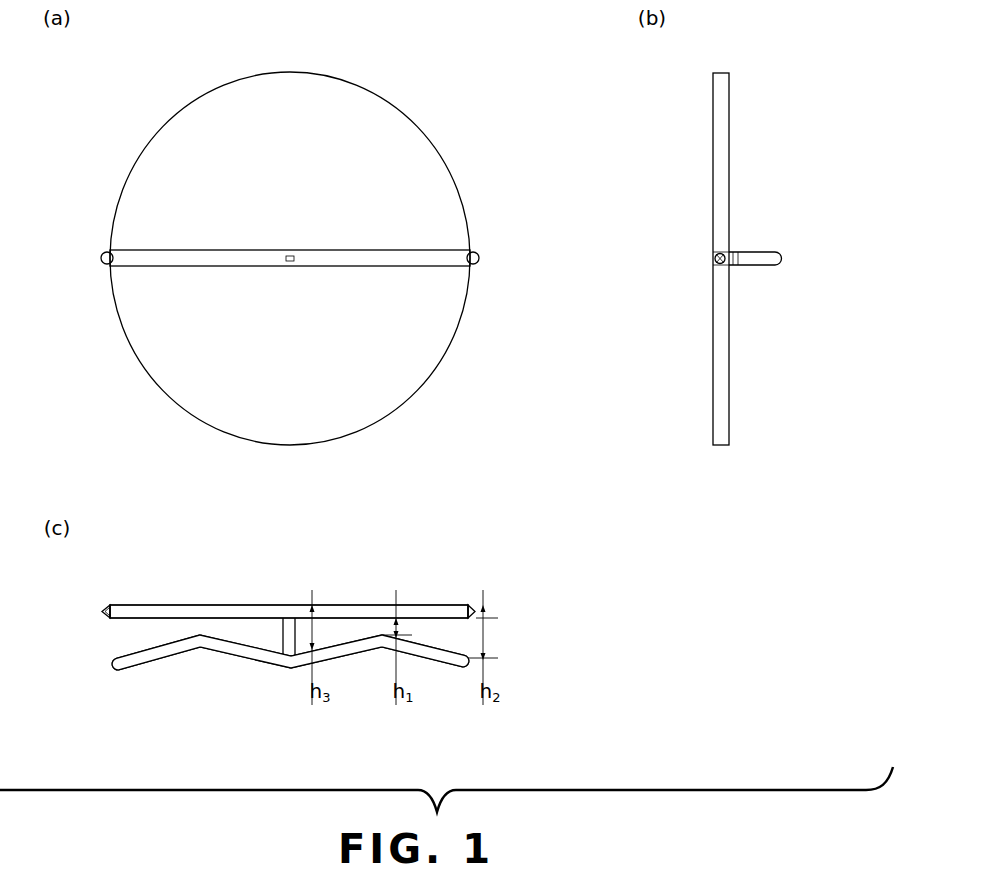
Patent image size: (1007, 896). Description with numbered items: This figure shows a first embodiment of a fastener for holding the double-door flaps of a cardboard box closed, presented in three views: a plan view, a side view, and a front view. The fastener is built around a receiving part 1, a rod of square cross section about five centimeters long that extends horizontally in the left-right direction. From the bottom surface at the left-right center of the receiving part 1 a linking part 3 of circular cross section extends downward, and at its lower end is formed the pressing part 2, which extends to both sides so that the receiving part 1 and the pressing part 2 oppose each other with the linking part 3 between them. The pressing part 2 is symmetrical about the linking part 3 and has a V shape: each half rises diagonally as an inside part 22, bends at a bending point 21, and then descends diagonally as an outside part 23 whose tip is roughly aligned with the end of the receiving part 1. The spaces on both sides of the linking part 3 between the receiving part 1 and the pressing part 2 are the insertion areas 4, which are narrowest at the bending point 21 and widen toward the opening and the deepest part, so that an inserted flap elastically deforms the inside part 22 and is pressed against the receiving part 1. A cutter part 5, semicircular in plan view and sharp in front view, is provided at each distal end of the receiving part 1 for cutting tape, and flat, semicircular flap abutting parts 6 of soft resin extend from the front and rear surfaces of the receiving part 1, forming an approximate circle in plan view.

The receiving part 1 is at (152, 258).
The pressing part 2 is at (454, 491).
The linking part 3 is at (738, 266).
The insertion areas 4 is at (112, 639).
The cutter part 5 is at (101, 258).
The flap abutting parts (tab parts) 6 is at (425, 175).
The bending point 21 is at (199, 650).
The inside part 22 is at (339, 683).
The outside part 23 is at (152, 667).